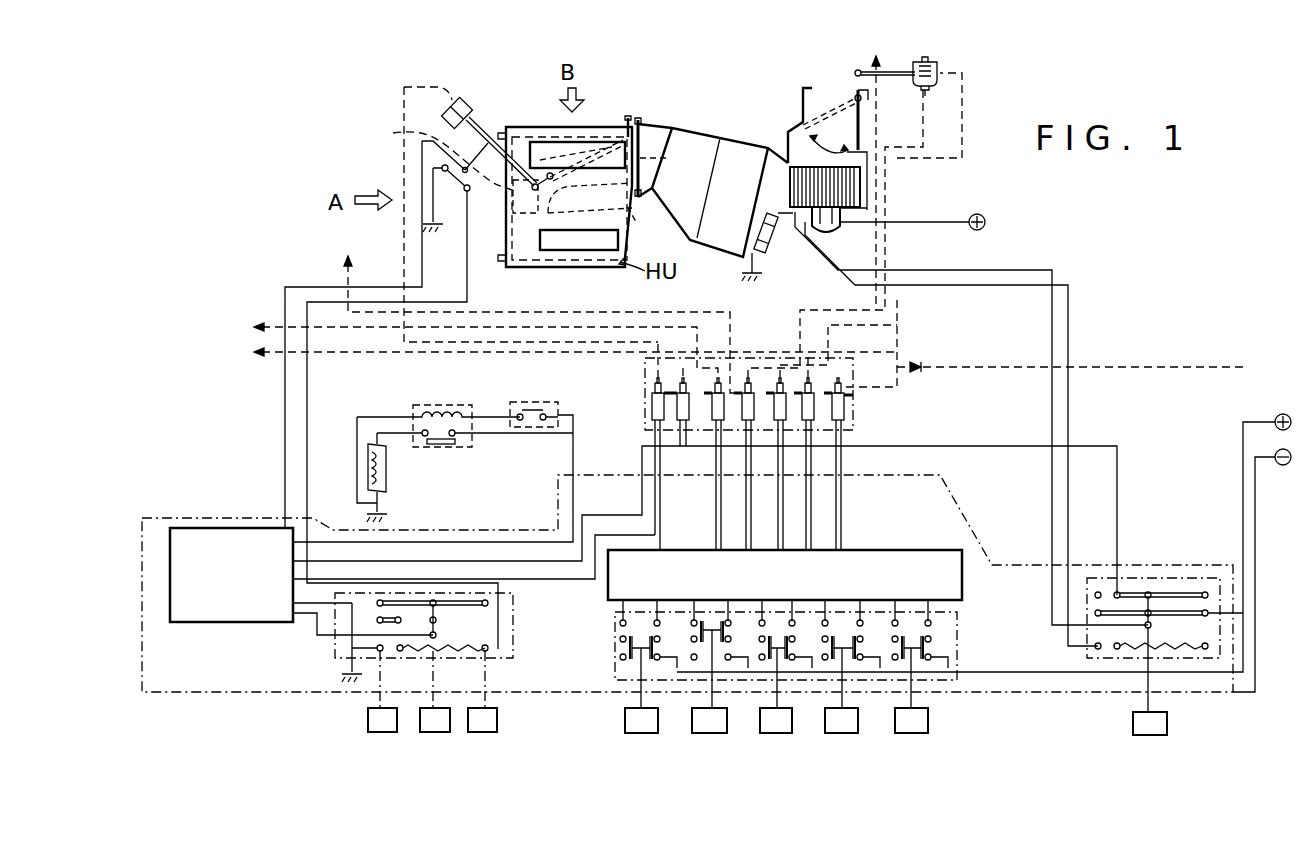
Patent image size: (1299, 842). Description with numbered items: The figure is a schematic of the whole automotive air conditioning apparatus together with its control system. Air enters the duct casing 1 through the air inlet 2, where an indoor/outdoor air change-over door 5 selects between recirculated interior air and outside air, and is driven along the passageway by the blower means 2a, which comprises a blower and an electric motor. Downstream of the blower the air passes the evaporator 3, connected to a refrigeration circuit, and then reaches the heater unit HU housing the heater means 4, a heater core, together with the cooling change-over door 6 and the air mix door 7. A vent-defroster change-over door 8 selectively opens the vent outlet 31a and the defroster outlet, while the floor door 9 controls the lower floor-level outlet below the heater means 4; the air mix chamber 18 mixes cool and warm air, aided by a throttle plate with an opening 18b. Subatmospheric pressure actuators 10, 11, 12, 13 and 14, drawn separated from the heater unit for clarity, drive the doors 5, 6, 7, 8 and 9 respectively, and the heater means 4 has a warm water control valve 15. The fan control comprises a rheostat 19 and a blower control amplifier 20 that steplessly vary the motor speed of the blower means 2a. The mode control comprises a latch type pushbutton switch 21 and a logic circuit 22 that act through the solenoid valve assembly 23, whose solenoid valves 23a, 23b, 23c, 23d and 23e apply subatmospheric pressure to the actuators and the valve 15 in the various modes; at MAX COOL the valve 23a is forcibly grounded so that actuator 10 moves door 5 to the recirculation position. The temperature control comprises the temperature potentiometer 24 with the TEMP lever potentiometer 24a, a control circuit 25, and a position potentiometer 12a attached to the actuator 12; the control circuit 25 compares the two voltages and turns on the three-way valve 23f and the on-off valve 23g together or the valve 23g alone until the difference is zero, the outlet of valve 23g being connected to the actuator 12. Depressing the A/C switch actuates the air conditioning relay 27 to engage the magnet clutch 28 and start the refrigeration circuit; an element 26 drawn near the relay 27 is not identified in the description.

The duct casing 1 is at (700, 126).
The air inlet 2 is at (797, 128).
The blower means 2a is at (843, 225).
The evaporator 3 is at (735, 160).
The heater means 4 is at (632, 215).
The indoor/outdoor air change-over door 5 is at (857, 118).
The cooling change-over door 6 is at (662, 158).
The air mix door 7 is at (628, 133).
The vent-defroster change-over door 8 is at (572, 145).
The floor door 9 is at (557, 252).
The actuator 10 is at (940, 64).
The actuator 11 is at (865, 174).
The actuator 12 is at (460, 100).
The position potentiometer 12a is at (443, 168).
The actuator 13 is at (536, 311).
The actuator 14 is at (469, 347).
The warm water control valve 15 is at (733, 343).
The air mix chamber 18 is at (525, 222).
The opening 18b is at (432, 159).
The rheostat 19 is at (1212, 660).
The blower control amplifier 20 is at (765, 252).
The latch type pushbutton switch 21 is at (957, 682).
The logic circuit 22 is at (963, 592).
The solenoid valve assembly 23 is at (880, 405).
The solenoid valve 23a is at (848, 421).
The solenoid valve 23b is at (812, 422).
The solenoid valve 23c is at (786, 425).
The solenoid valve 23d is at (748, 420).
The solenoid valve 23e is at (717, 420).
The three-way solenoid valve 23f is at (678, 425).
The on-off solenoid valve 23g is at (652, 405).
The temperature potentiometer 24 is at (496, 660).
The potentiometer of the TEMP lever 24a is at (457, 643).
The control circuit 25 is at (218, 622).
The switch 26 is at (535, 402).
The air conditioning relay 27 is at (433, 405).
The magnet clutch 28 is at (388, 476).
The vent outlet 31a is at (537, 150).